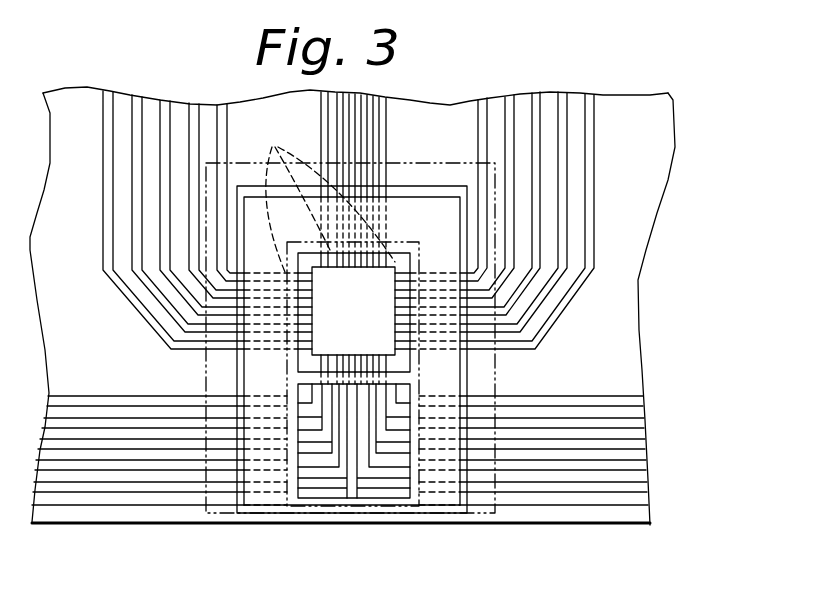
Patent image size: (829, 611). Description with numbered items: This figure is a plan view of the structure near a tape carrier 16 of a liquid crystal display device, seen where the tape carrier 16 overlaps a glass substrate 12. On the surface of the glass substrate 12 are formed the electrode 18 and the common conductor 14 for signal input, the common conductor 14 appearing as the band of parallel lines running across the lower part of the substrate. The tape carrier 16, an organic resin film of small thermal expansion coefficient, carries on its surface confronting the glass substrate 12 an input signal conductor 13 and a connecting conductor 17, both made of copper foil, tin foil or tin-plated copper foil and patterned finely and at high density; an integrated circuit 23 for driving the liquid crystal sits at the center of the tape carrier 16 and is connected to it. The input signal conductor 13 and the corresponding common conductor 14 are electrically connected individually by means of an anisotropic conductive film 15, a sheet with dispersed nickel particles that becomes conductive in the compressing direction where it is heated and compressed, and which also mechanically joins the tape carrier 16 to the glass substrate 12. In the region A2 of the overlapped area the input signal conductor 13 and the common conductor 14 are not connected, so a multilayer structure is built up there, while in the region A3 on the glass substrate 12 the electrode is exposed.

The glass substrate 12 is at (545, 515).
The input signal conductor 13 is at (365, 488).
The common conductor for input signal 14 is at (643, 402).
The anisotropic conductive film 15 is at (402, 163).
The tape carrier 16 is at (297, 512).
The connecting conductor 17 is at (322, 191).
The electrode 18 is at (545, 97).
The integrated circuit 23 is at (377, 288).
The region A2 is at (347, 499).
The region A3 is at (610, 520).